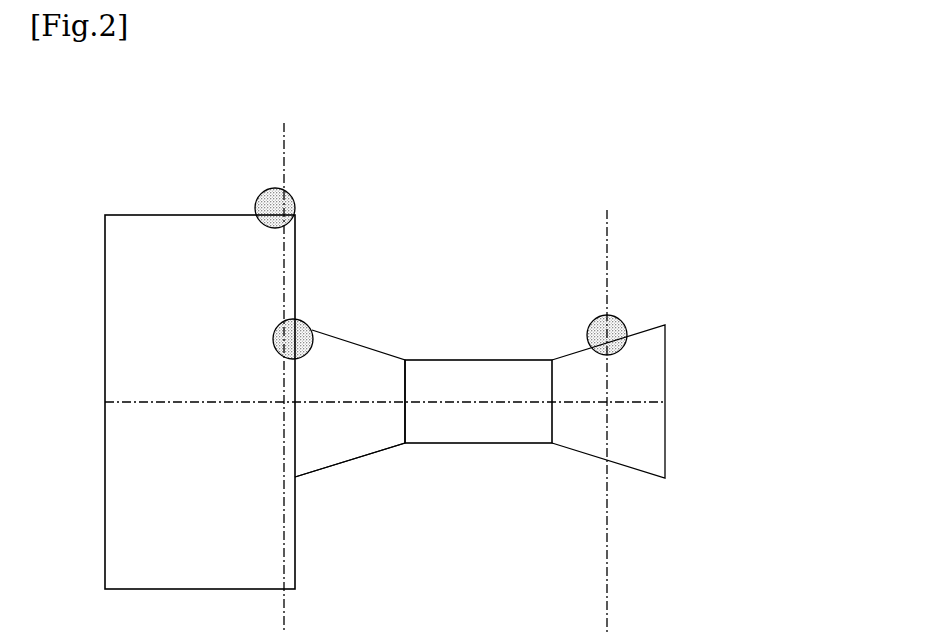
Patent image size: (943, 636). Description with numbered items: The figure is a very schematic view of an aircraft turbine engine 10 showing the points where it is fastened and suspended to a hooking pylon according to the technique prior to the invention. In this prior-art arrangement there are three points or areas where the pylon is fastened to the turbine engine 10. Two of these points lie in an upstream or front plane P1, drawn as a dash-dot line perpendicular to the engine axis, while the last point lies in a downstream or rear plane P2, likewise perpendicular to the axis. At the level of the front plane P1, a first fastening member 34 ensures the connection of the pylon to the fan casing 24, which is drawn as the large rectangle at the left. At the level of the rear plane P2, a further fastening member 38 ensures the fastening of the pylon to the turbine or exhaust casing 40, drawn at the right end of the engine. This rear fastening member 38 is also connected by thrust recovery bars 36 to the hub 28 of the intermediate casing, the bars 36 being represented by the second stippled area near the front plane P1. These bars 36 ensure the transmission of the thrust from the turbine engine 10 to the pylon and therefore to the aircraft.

The turbine engine 10 is at (748, 216).
The fan casing 24 is at (150, 226).
The hub of the intermediate casing 28 is at (300, 480).
The first fastening member 34 is at (277, 186).
The thrust recovery bars 36 is at (306, 320).
The fastening member 38 is at (612, 313).
The turbine or exhaust casing 40 is at (622, 435).
The upstream or front plane P1 is at (282, 134).
The downstream or rear plane P2 is at (608, 222).